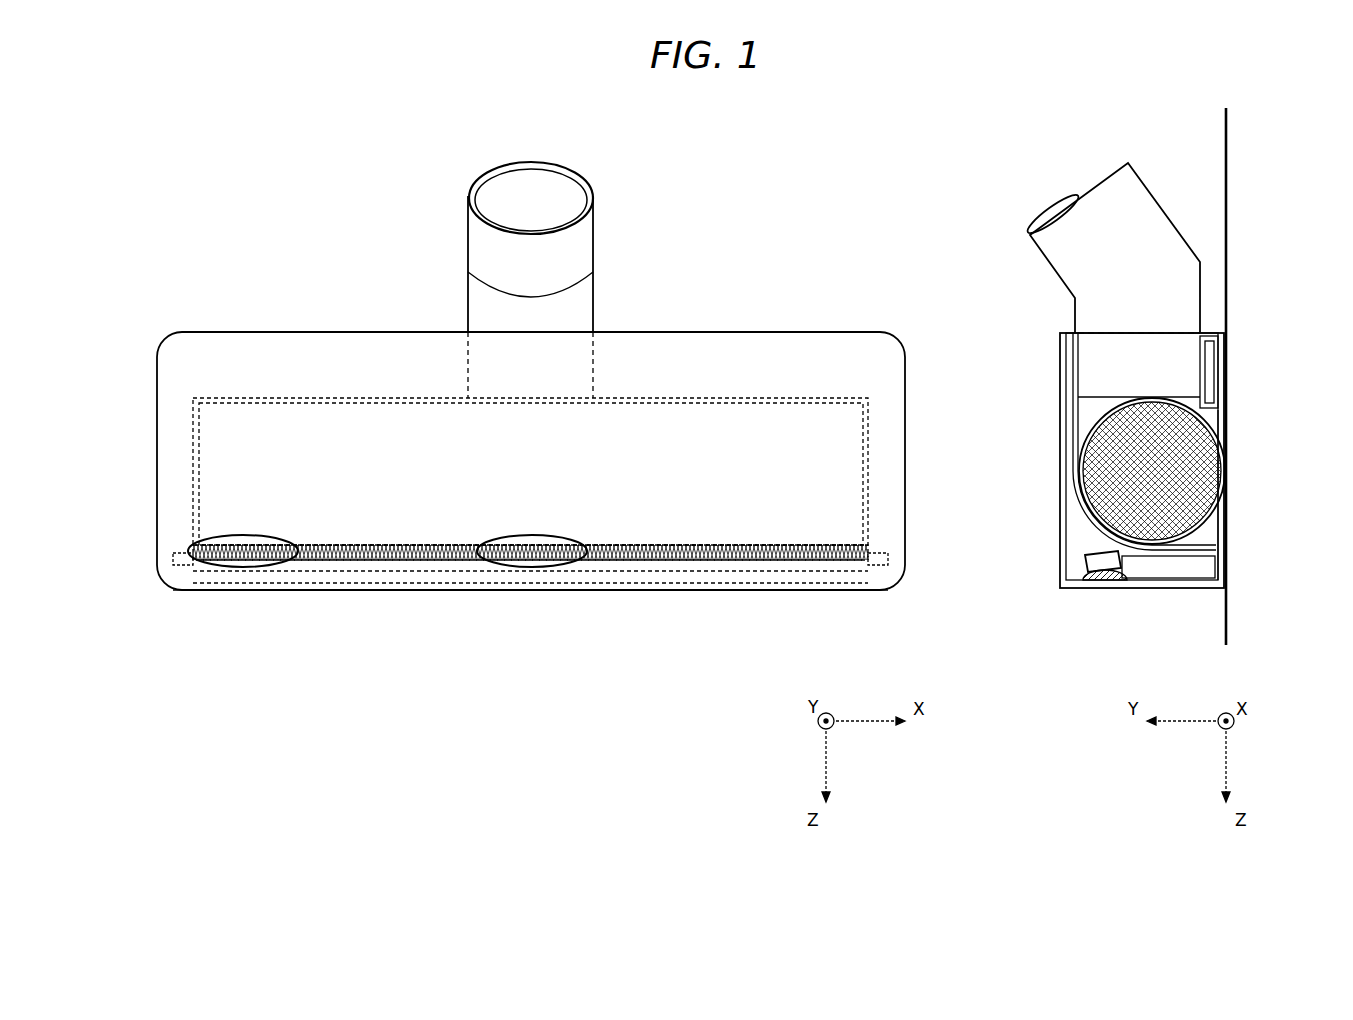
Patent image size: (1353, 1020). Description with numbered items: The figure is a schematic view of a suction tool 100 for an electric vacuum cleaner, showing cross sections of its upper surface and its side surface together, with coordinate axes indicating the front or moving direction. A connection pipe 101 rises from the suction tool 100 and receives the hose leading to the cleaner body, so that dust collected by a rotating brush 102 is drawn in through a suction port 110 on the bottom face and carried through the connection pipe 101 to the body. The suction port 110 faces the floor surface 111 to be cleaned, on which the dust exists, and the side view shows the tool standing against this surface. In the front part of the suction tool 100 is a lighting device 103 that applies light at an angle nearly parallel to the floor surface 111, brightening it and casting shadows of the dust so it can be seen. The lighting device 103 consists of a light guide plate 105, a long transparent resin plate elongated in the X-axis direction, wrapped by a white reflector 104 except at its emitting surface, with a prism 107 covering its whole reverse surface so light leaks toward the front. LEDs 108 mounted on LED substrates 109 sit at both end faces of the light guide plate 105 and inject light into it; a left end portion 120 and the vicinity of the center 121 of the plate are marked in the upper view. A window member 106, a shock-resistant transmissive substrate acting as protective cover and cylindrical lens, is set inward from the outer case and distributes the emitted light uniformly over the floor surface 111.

The suction tool 100 is at (1066, 332).
The connection pipe 101 is at (1076, 243).
The rotating brush 102 is at (1079, 460).
The lighting device 103 is at (143, 548).
The reflector 104 is at (1093, 556).
The light guide plate 105 is at (668, 572).
The window member 106 is at (745, 572).
The prism 107 is at (408, 538).
The LED 108 is at (178, 592).
The LED substrate 109 is at (177, 550).
The suction port 110 is at (1222, 540).
The floor surface 111 is at (1230, 612).
The left end portion of the light guide plate 120 is at (278, 564).
The vicinity of the center of the light guide plate 121 is at (567, 562).